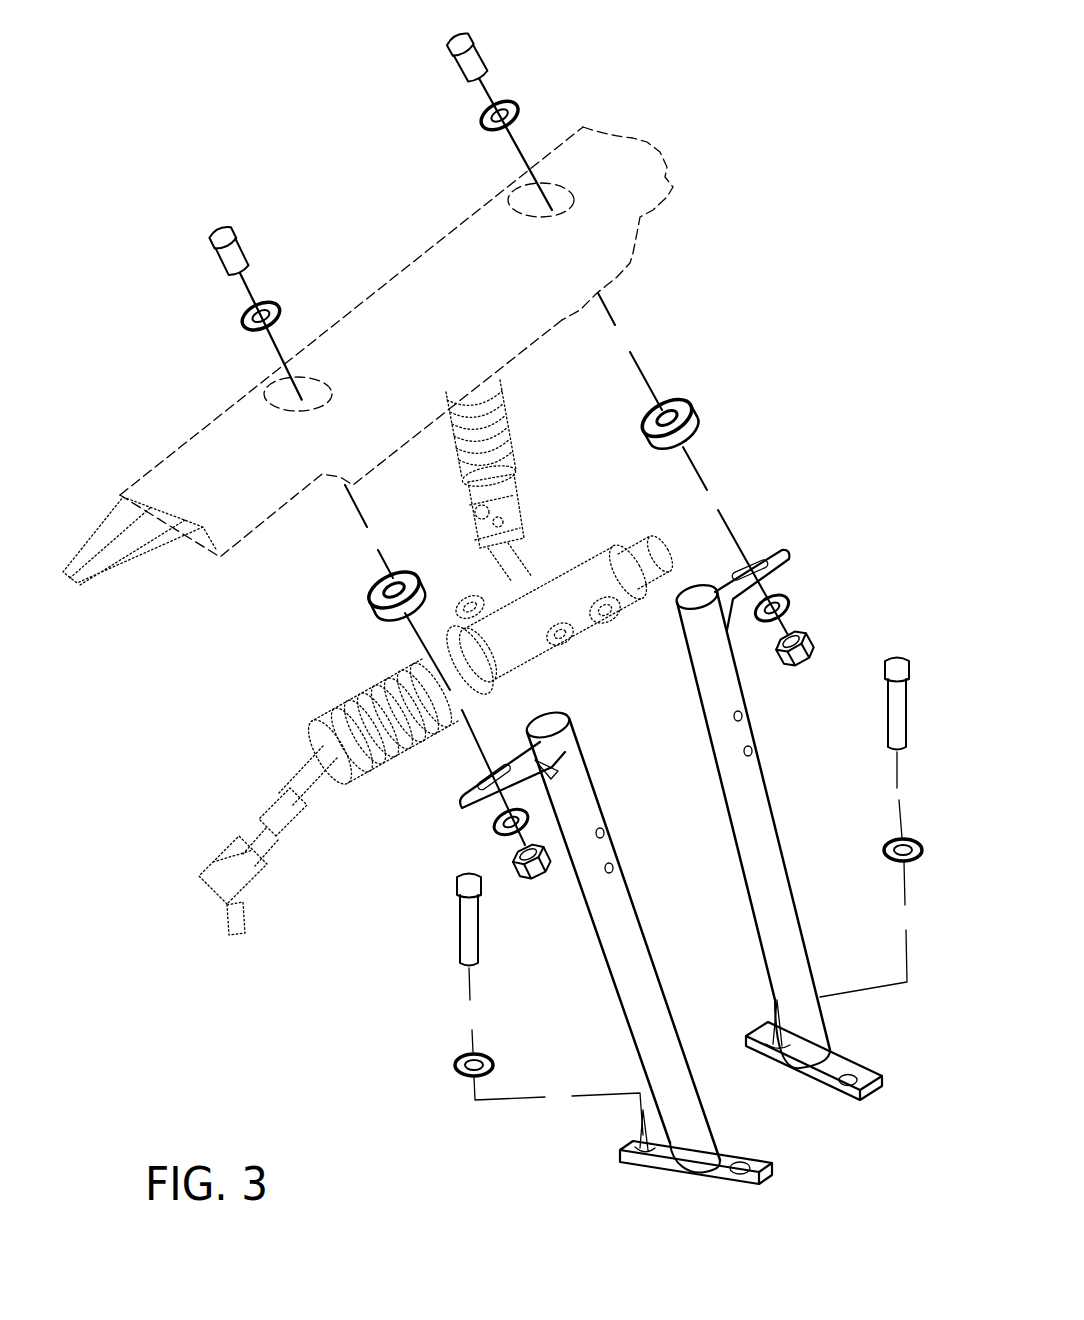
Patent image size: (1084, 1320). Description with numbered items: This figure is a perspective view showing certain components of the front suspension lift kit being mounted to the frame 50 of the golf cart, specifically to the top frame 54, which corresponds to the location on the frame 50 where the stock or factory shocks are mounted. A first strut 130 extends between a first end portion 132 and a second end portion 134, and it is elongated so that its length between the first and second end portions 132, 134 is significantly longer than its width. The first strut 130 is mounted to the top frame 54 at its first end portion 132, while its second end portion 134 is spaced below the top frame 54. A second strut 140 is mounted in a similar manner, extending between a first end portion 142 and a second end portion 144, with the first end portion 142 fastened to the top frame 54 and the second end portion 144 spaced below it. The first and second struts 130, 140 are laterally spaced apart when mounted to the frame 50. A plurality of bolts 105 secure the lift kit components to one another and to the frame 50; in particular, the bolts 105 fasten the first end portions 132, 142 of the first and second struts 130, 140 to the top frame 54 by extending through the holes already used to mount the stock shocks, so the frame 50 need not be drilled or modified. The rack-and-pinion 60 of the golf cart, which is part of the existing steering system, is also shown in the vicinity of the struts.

The frame 50 is at (192, 500).
The top frame 54 is at (633, 173).
The rack-and-pinion 60 is at (596, 566).
The bolts 105 is at (470, 56).
The first strut 130 is at (627, 966).
The first end portion 132 is at (455, 805).
The second end portion 134 is at (678, 1178).
The second strut 140 is at (757, 823).
The first end portion 142 is at (793, 553).
The second end portion 144 is at (852, 1048).